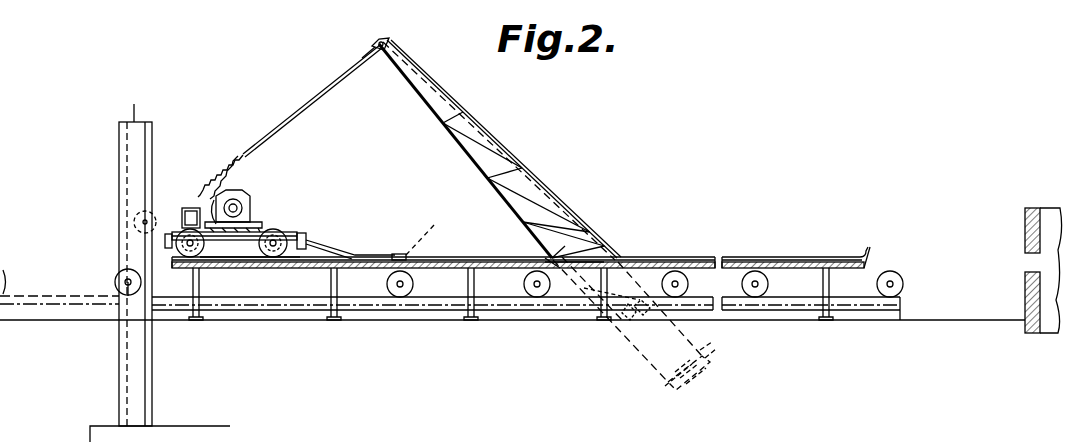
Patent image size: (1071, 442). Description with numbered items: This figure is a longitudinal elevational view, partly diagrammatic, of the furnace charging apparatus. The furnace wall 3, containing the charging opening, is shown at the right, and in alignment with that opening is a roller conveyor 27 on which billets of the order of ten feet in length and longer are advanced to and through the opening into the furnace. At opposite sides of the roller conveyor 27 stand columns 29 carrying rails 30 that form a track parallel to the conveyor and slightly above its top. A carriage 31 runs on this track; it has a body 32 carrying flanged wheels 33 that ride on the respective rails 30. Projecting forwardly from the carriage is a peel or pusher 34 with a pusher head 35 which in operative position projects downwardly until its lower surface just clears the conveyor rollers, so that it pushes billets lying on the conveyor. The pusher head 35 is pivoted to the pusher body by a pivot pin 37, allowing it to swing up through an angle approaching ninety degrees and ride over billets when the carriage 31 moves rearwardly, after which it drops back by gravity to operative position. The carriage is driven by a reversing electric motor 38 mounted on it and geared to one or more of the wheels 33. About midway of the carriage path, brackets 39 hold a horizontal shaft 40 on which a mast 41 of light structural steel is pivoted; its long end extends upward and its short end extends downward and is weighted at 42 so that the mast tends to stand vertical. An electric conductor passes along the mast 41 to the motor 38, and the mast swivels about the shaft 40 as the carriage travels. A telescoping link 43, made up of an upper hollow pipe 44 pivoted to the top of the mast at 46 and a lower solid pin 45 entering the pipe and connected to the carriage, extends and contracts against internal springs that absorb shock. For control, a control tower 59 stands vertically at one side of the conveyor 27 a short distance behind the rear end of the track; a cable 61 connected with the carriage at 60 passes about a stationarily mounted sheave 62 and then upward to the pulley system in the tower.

The furnace wall 3 is at (1025, 296).
The roller conveyor 27 is at (740, 285).
The columns 29 is at (192, 284).
The rails 30 is at (661, 257).
The carriage 31 is at (250, 222).
The body 32 is at (248, 241).
The flanged wheels 33 is at (285, 230).
The pusher 34 is at (352, 253).
The pusher head 35 is at (427, 231).
The pivot pin 37 is at (398, 254).
The electric motor 38 is at (240, 197).
The brackets 39 is at (615, 322).
The shaft 40 is at (632, 318).
The mast 41 is at (569, 200).
The weight 42 is at (712, 354).
The link 43 is at (336, 74).
The pipe 44 is at (300, 110).
The pin 45 is at (215, 183).
The pivot 46 is at (383, 38).
The control tower 59 is at (119, 143).
The connection 60 is at (185, 212).
The cable 61 is at (163, 239).
The sheave 62 is at (128, 218).